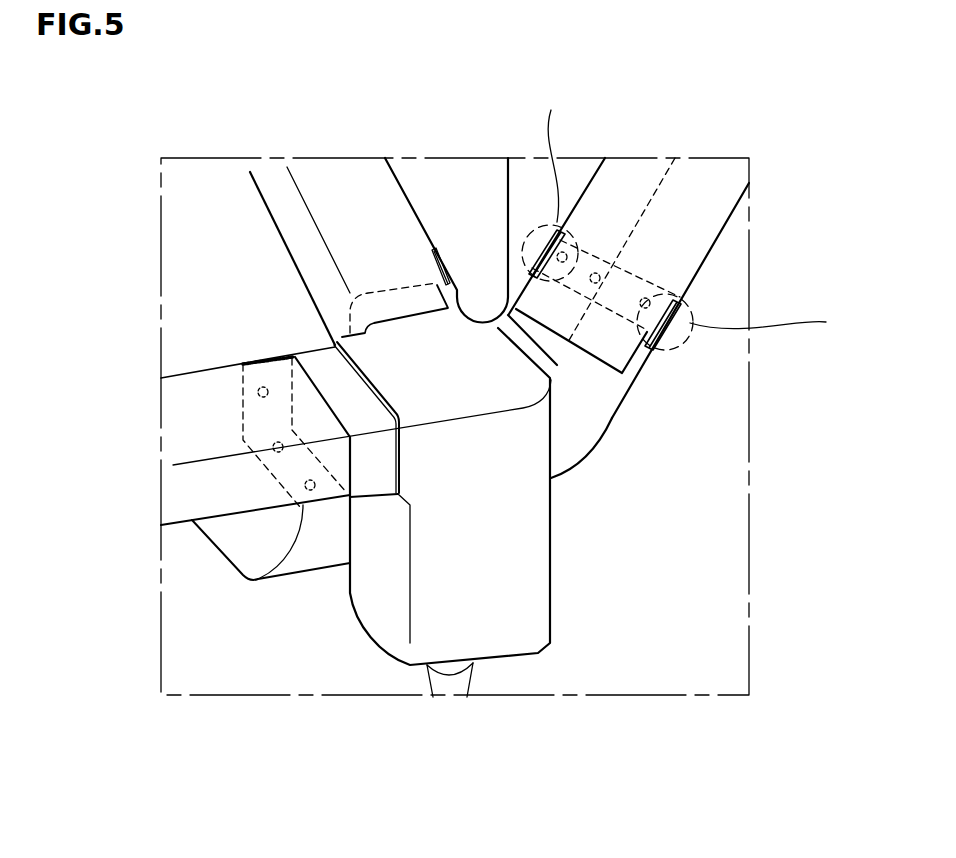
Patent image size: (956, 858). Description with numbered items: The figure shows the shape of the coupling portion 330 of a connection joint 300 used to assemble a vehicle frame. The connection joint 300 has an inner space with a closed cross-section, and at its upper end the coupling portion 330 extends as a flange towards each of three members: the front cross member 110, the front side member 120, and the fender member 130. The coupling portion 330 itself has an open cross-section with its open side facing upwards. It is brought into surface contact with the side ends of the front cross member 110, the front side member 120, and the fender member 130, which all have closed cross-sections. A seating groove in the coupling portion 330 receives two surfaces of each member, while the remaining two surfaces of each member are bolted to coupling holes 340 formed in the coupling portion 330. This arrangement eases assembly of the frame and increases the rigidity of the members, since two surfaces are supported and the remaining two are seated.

The front cross member 110 is at (180, 480).
The front side member 120 is at (348, 188).
The fender member 130 is at (708, 188).
The connection joint 300 is at (505, 625).
The coupling portion 330 is at (590, 408).
The coupling holes 340 is at (262, 398).